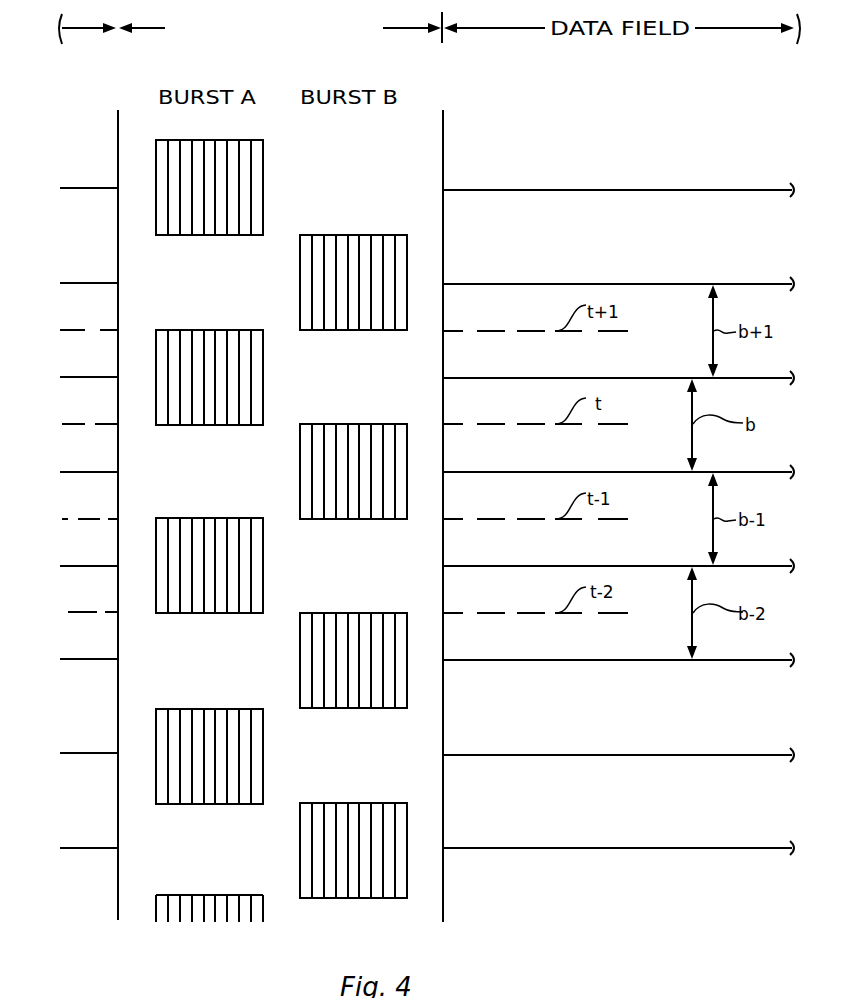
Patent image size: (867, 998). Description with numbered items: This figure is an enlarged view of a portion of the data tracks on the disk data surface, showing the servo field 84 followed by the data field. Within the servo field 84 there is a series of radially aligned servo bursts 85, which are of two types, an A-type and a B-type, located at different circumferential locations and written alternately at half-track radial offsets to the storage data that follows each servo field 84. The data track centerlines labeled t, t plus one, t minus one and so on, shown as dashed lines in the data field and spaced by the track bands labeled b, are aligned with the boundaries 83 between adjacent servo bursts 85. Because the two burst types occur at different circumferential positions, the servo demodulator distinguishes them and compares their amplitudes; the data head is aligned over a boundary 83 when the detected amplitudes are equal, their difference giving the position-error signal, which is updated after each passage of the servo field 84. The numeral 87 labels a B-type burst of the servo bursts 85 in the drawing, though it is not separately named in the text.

The boundaries 83 is at (293, 410).
The servo field 84 is at (117, 12).
The servo bursts 85 is at (233, 329).
The burst B servo pattern 87 is at (378, 423).